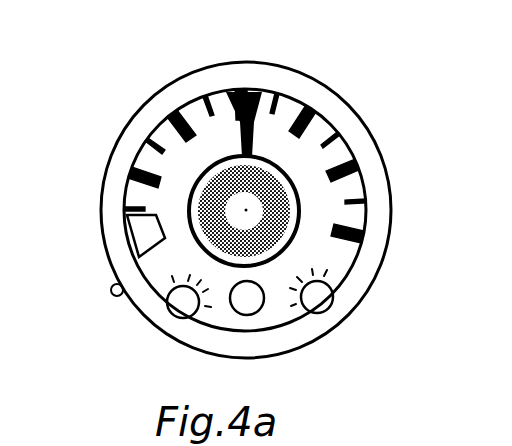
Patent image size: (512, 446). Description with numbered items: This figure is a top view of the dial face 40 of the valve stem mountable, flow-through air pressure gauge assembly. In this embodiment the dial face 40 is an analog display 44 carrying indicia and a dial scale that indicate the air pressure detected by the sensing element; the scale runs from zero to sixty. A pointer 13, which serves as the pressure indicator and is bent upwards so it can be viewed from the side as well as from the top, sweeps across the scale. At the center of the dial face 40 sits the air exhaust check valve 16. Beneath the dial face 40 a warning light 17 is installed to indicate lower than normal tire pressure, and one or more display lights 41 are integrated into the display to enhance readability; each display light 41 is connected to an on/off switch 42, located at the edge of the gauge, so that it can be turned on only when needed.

The dial face 40 is at (397, 117).
The analog display 44 is at (138, 165).
The pointer 13 is at (270, 104).
The air exhaust check valve 16 is at (300, 207).
The on/off switch 42 is at (112, 292).
The display light 41 is at (190, 307).
The warning light 17 is at (262, 300).